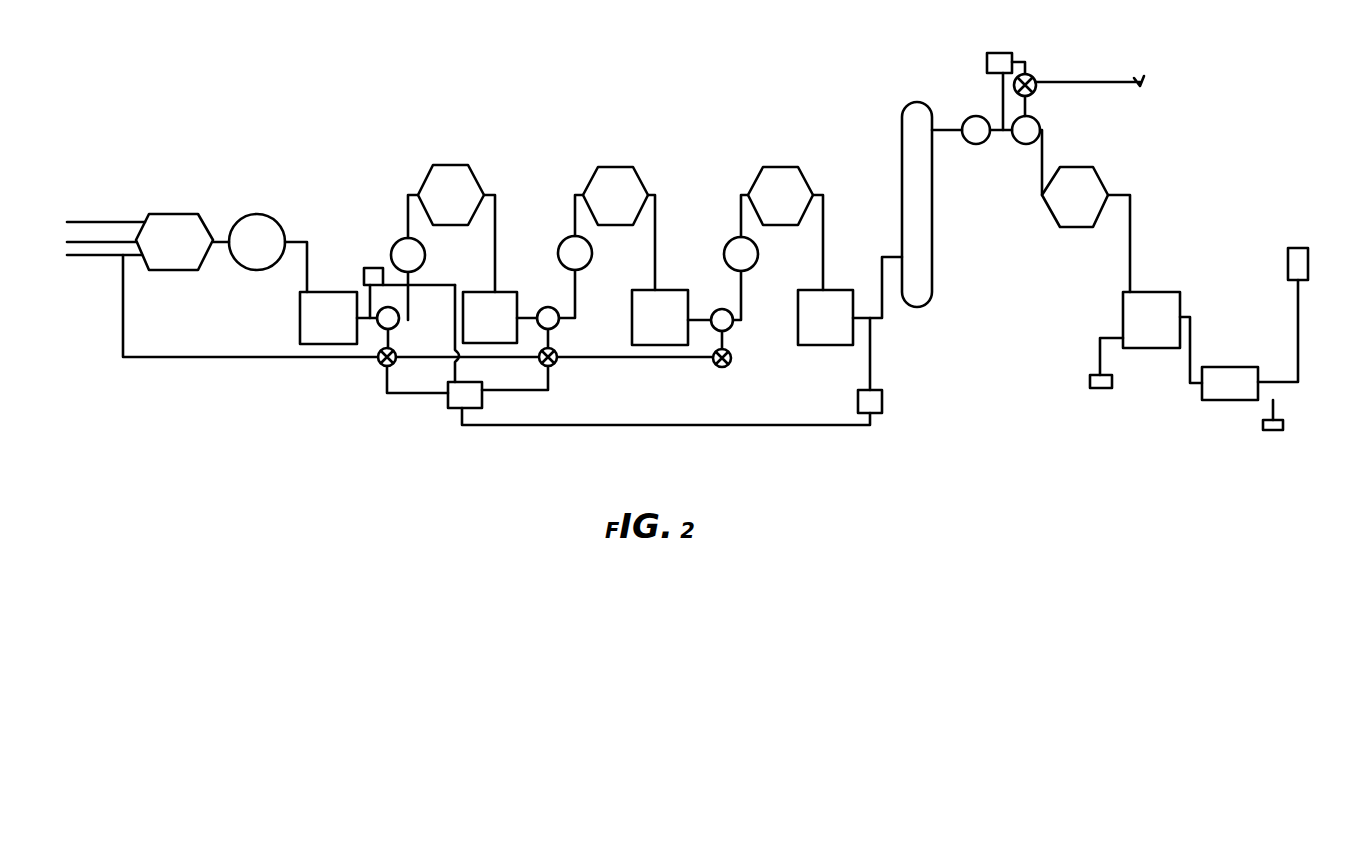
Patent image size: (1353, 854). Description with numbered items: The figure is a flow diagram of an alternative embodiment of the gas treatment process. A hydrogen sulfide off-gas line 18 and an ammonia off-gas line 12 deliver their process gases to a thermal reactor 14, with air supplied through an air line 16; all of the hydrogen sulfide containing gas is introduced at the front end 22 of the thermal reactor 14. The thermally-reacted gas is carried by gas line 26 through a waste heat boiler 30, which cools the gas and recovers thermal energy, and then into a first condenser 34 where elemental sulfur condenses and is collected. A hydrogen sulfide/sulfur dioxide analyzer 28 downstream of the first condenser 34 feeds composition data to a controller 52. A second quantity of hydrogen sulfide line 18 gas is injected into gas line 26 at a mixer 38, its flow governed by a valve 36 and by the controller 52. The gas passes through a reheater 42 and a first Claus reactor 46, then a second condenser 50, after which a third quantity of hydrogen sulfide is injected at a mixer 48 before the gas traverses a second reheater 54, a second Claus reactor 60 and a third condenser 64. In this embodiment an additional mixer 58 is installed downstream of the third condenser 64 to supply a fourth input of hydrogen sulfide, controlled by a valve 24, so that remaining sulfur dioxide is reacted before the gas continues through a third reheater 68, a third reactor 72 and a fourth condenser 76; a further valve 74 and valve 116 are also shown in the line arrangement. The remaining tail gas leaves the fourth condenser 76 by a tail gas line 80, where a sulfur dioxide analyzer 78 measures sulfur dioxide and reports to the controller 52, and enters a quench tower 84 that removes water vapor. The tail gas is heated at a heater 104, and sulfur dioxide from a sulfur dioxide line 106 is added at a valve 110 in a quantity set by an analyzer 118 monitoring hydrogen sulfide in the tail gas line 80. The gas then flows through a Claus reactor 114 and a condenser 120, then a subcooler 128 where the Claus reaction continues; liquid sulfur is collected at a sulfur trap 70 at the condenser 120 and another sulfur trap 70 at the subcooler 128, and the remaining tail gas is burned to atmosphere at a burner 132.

The ammonia off-gas line 12 is at (82, 222).
The thermal reactor 14 is at (186, 210).
The air line 16 is at (108, 242).
The hydrogen sulfide off-gas line 18 is at (100, 263).
The front end 22 is at (145, 240).
The valve 24 is at (733, 366).
The gas line 26 is at (218, 250).
The hydrogen sulfide/sulfur dioxide analyzer 28 is at (372, 268).
The waste heat boiler 30 is at (252, 222).
The first condenser 34 is at (322, 307).
The valve 36 is at (380, 363).
The mixer 38 is at (395, 328).
The reheater 42 is at (400, 243).
The first Claus reactor 46 is at (448, 163).
The mixer 48 is at (548, 307).
The second condenser 50 is at (473, 290).
The controller 52 is at (448, 405).
The second reheater 54 is at (563, 242).
The mixer 58 is at (735, 325).
The second Claus reactor 60 is at (615, 165).
The third condenser 64 is at (645, 290).
The third reheater 68 is at (727, 247).
The sulfur trap 70 is at (1090, 388).
The third reactor 72 is at (772, 167).
The valve 74 is at (558, 362).
The fourth condenser 76 is at (808, 290).
The sulfur dioxide analyzer 78 is at (882, 395).
The tail gas line 80 is at (882, 290).
The quench tower 84 is at (907, 103).
The heater 104 is at (978, 116).
The sulfur dioxide line 106 is at (1090, 75).
The valve 110 is at (1040, 118).
The Claus reactor 114 is at (1075, 167).
The valve 116 is at (1035, 75).
The analyzer 118 is at (987, 62).
The condenser 120 is at (1123, 318).
The subcooler 128 is at (1218, 367).
The burner 132 is at (1288, 272).